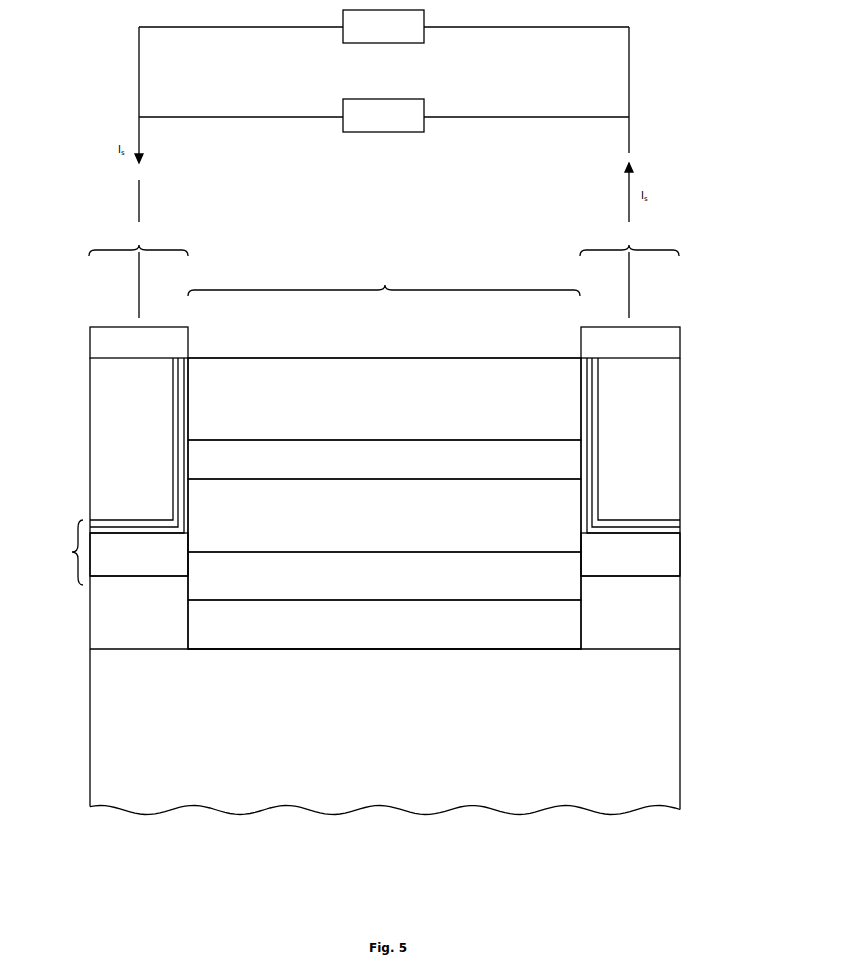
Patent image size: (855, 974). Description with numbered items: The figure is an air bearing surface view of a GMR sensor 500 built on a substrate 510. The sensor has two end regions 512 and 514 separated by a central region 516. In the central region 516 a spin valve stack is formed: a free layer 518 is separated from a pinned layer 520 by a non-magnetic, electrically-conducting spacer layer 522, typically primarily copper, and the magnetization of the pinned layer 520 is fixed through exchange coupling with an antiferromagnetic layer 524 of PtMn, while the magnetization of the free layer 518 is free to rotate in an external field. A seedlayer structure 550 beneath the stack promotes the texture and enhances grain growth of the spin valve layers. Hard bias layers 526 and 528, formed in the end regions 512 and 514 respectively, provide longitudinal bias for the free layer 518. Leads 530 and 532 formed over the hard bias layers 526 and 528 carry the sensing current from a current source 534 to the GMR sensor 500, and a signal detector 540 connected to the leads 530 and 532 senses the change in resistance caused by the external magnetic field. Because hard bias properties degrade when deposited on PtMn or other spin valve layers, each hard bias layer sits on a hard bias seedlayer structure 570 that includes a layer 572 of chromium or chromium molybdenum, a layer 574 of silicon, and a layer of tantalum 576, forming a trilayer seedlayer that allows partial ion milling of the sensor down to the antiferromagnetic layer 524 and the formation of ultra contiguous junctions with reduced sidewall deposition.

The GMR sensor 500 is at (640, 842).
The substrate 510 is at (665, 743).
The end region 512 is at (138, 243).
The end region 514 is at (629, 243).
The central region 516 is at (384, 452).
The free layer 518 is at (384, 399).
The pinned layer 520 is at (384, 515).
The spacer layer 522 is at (384, 459).
The antiferromagnetic layer 524 is at (565, 575).
The hard bias layer 526 is at (123, 480).
The hard bias layer 528 is at (663, 453).
The lead 530 is at (99, 343).
The lead 532 is at (671, 340).
The current source 534 is at (392, 132).
The signal detector 540 is at (373, 43).
The seedlayer structure 550 is at (573, 607).
The hard bias seedlayer structure 570 is at (65, 565).
The layer of chromium or chromium molybdenum 572 is at (150, 523).
The layer of silicon 574 is at (135, 529).
The layer of tantalum 576 is at (132, 568).